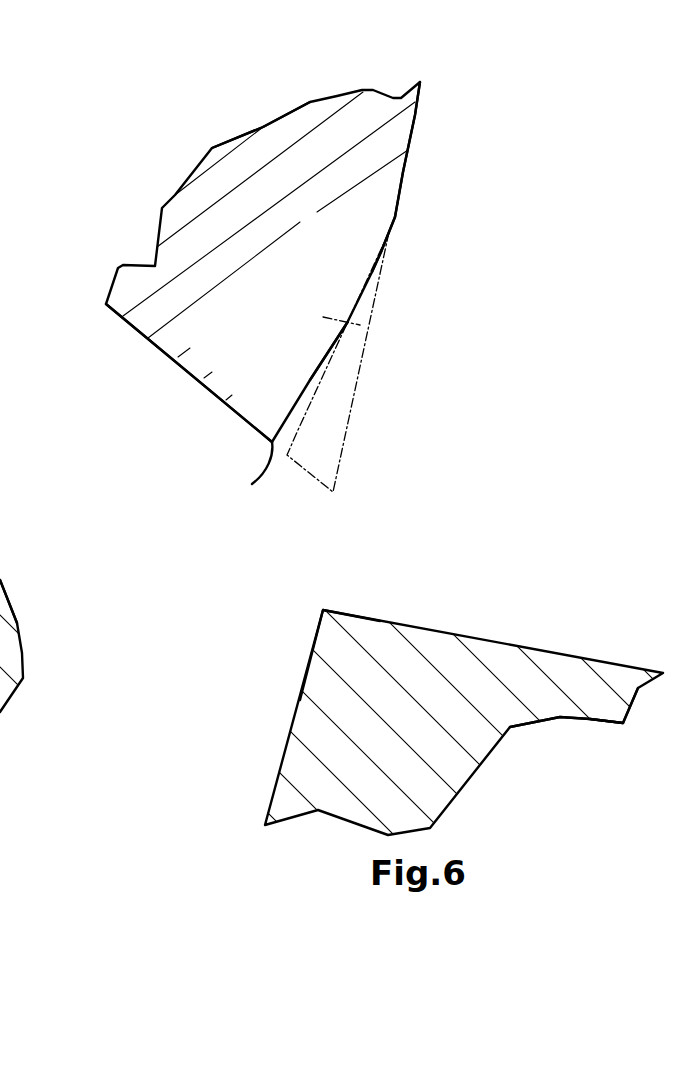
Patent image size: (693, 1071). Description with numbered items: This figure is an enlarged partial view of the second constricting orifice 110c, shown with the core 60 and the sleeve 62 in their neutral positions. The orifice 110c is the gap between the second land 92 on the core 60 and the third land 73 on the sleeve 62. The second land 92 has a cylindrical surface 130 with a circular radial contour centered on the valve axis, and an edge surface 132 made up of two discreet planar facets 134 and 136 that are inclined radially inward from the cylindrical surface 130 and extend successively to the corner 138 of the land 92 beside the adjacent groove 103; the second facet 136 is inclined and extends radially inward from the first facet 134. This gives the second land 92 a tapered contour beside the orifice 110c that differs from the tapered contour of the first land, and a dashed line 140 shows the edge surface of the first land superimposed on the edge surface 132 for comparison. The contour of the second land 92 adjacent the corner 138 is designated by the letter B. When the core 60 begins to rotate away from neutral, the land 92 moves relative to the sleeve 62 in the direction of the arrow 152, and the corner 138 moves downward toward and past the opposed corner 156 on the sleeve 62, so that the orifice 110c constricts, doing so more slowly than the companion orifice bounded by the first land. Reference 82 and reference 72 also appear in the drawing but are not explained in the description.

The core 60 is at (311, 106).
The second land 92 is at (265, 147).
The cylindrical surface 130 is at (400, 189).
The first facet 134 is at (380, 255).
The edge surface 132 is at (374, 273).
The second facet 136 is at (310, 382).
The dashed line 140 is at (298, 430).
The corner 138 is at (251, 483).
The arrow 152 is at (132, 340).
The groove 103 is at (158, 452).
The contour B is at (234, 334).
The workpiece 82 is at (508, 519).
The second constricting orifice 110c is at (358, 569).
The corner 156 is at (323, 610).
The third land 73 is at (513, 705).
The sleeve 62 is at (596, 720).
The chip edge 72 is at (0, 570).